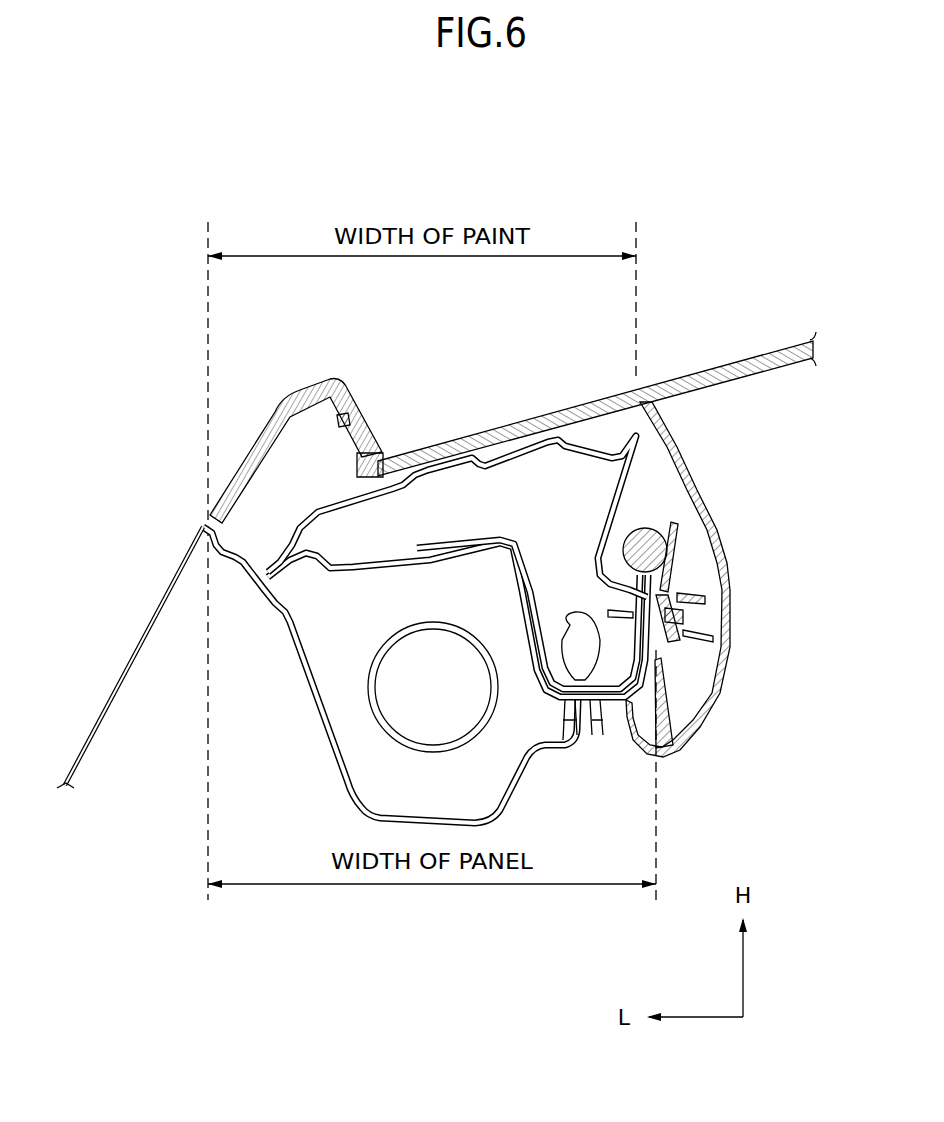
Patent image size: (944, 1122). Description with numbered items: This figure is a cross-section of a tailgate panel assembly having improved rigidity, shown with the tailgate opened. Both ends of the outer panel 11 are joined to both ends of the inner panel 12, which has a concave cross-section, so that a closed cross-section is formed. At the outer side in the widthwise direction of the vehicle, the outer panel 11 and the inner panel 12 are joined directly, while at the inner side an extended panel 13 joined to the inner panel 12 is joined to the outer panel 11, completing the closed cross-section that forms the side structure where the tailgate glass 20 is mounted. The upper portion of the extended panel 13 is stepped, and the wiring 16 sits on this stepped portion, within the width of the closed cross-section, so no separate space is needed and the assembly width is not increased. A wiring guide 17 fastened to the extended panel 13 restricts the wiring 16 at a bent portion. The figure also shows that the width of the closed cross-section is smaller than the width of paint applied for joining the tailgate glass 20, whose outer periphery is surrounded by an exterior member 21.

The outer panel 11 is at (548, 442).
The inner panel 12 is at (355, 562).
The extended panel 13 is at (660, 656).
The wiring 16 is at (624, 553).
The wiring guide 17 is at (658, 578).
The tailgate glass 20 is at (760, 363).
The exterior member 21 is at (293, 402).